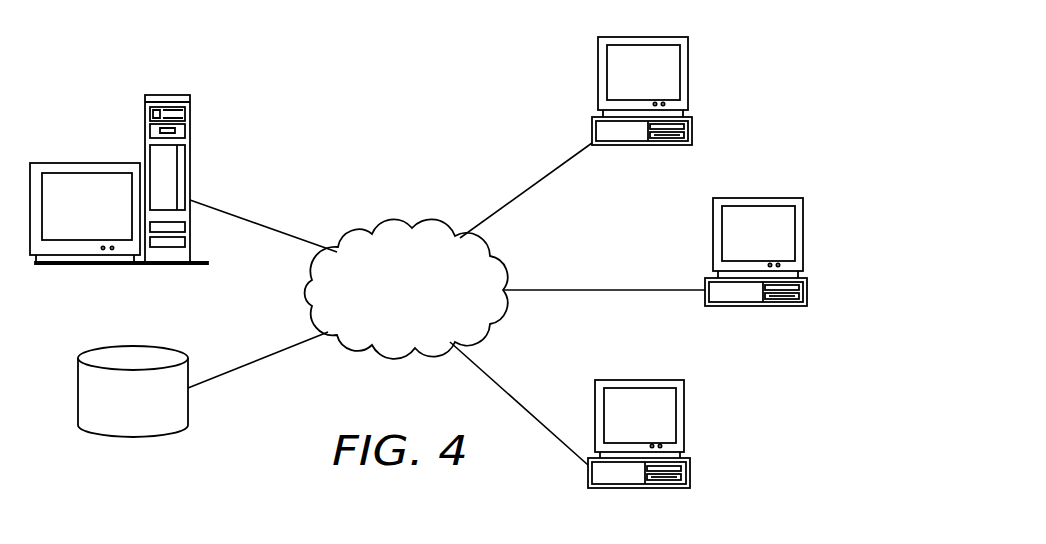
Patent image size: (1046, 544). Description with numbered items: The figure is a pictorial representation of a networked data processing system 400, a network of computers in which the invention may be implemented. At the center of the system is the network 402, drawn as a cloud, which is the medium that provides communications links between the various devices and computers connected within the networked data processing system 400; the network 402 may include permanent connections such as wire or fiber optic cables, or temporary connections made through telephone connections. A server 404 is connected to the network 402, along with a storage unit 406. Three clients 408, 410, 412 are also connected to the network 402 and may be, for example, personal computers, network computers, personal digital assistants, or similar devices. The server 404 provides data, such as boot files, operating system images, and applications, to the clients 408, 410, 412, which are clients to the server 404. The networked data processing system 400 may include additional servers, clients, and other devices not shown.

The networked data processing system 400 is at (279, 77).
The network 402 is at (386, 316).
The server 404 is at (145, 120).
The storage unit 406 is at (78, 390).
The client 408 is at (688, 85).
The client 410 is at (802, 240).
The client 412 is at (683, 422).